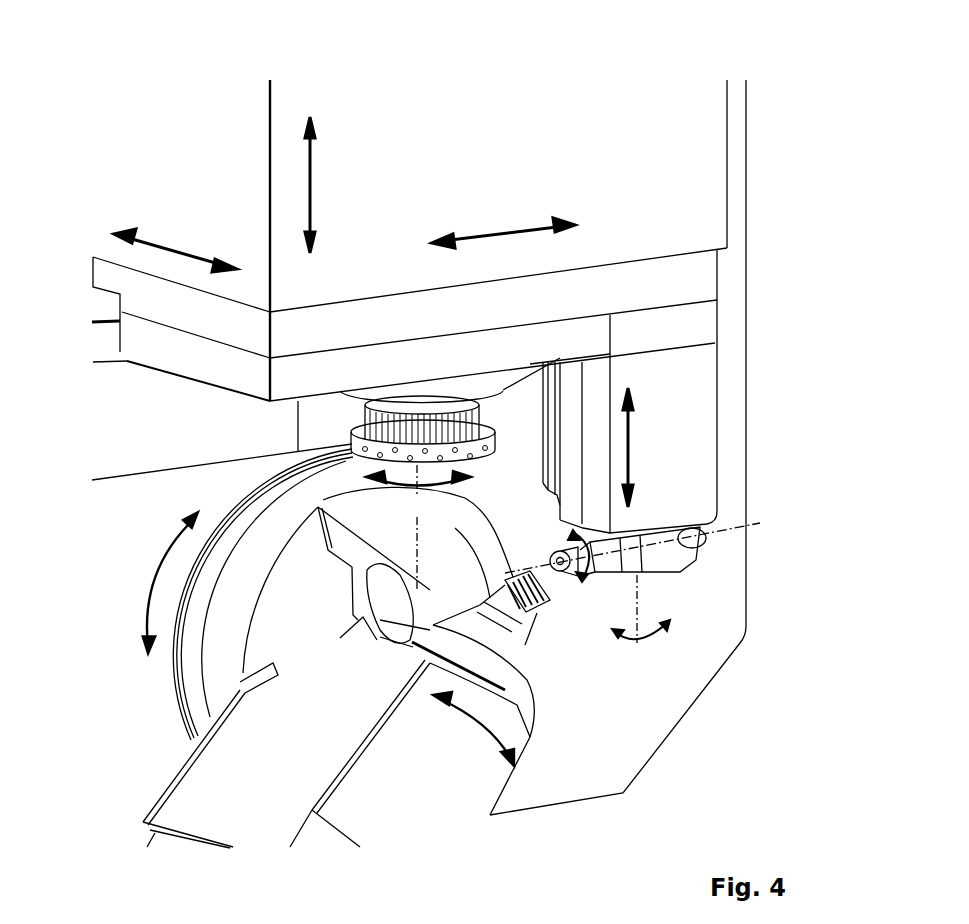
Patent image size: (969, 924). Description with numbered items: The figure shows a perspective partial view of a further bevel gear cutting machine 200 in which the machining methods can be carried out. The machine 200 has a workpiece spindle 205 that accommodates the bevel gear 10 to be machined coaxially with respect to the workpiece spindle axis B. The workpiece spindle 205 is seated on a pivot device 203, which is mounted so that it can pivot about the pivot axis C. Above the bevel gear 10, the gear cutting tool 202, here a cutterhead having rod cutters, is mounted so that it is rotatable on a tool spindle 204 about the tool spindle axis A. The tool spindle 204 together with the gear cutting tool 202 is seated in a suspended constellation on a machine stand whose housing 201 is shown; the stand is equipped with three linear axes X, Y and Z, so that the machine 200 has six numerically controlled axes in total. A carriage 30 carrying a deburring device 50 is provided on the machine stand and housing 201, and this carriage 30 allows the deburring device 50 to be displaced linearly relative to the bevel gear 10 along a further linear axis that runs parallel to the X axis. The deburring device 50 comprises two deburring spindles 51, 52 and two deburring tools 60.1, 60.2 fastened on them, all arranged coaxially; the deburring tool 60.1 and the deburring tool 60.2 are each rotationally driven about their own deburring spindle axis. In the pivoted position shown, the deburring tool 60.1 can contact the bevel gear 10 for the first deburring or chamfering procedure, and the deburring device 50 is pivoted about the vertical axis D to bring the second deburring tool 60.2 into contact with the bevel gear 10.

The bevel gear cutting machine 200 is at (118, 40).
The housing 201 is at (690, 122).
The gear cutting tool 202 is at (370, 463).
The pivot device 203 is at (160, 694).
The tool spindle 204 is at (500, 400).
The workpiece spindle 205 is at (580, 700).
The carriage 30 is at (683, 406).
The bevel gear 10 is at (556, 616).
The deburring device 50 is at (666, 585).
The deburring spindle 51 is at (680, 572).
The deburring spindle 52 is at (692, 545).
The deburring tool 60.1 is at (566, 580).
The deburring tool 60.2 is at (718, 523).